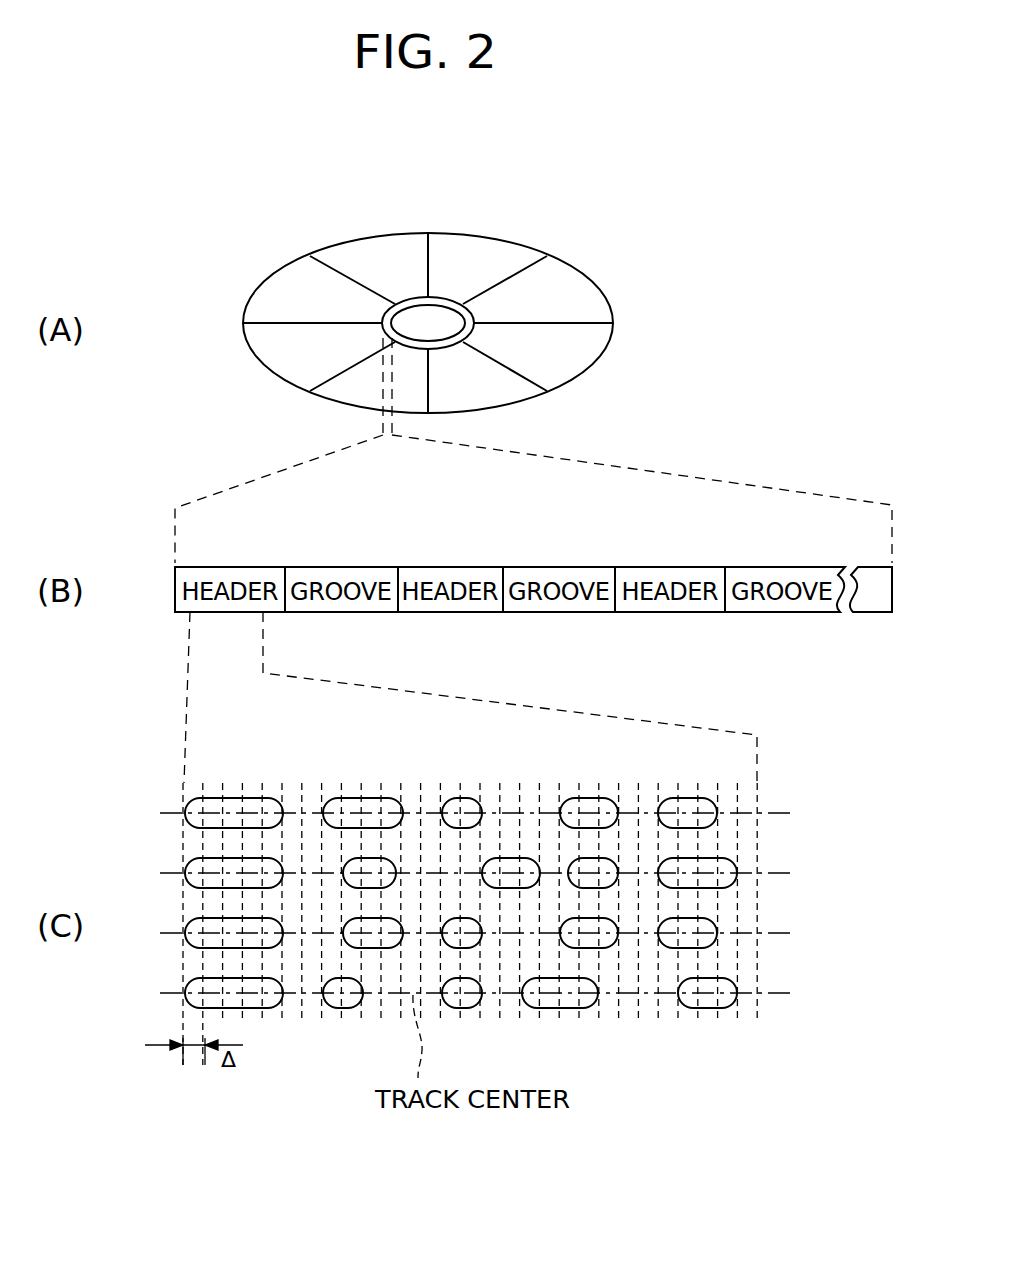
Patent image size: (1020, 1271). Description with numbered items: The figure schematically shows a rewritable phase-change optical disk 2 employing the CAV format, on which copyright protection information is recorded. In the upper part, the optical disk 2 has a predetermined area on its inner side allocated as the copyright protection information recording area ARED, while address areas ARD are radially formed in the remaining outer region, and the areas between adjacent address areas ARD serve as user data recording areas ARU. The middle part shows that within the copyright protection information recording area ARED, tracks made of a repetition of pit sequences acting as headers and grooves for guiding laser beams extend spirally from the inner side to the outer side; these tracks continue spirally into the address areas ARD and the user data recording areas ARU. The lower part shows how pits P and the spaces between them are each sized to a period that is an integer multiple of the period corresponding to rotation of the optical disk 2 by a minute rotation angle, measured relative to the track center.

The optical disk 2 is at (485, 268).
The address area ARD is at (420, 250).
The copyright protection information recording area ARED is at (441, 303).
The user data recording area ARU is at (563, 293).
The pit P is at (253, 798).